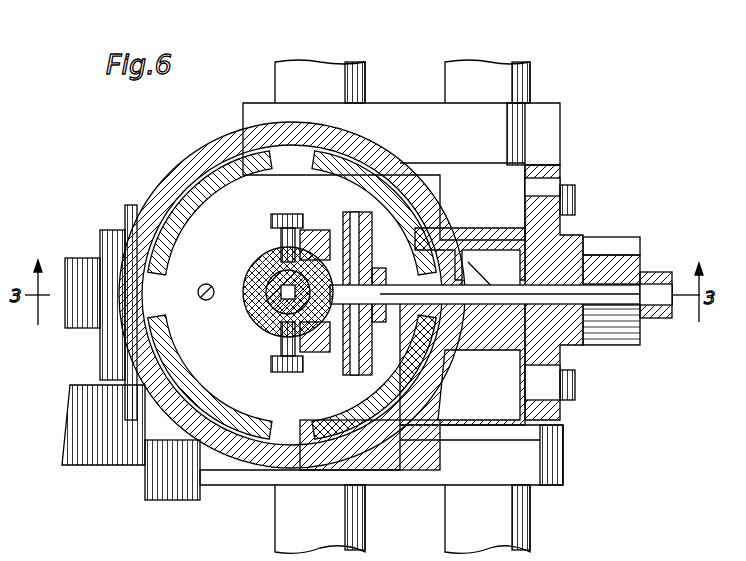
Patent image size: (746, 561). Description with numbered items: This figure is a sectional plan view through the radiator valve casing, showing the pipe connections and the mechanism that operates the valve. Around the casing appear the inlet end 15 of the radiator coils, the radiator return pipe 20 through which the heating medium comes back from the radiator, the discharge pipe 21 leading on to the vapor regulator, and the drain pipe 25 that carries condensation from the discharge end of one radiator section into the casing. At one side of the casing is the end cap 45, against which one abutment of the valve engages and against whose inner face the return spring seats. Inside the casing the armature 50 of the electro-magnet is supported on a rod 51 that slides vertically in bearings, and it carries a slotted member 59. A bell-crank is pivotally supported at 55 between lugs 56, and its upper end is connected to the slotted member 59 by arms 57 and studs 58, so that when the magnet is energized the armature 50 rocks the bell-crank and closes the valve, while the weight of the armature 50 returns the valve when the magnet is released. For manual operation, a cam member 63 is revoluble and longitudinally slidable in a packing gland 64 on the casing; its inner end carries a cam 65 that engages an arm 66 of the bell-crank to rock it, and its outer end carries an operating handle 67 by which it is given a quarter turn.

The inlet end of the radiator coils 15 is at (277, 521).
The radiator return pipe 20 is at (350, 62).
The discharge pipe 21 is at (486, 62).
The drain pipe 25 is at (70, 426).
The end cap 45 is at (78, 318).
The armature 50 is at (228, 406).
The rod 51 is at (252, 278).
The pivot 55 is at (397, 170).
The lugs 56 is at (352, 360).
The arms 57 is at (312, 240).
The studs 58 is at (286, 215).
The slotted member 59 is at (250, 312).
The cam member 63 is at (630, 290).
The packing gland 64 is at (594, 256).
The cam 65 is at (479, 385).
The arm of the bell-crank 66 is at (443, 243).
The operating handle 67 is at (665, 310).